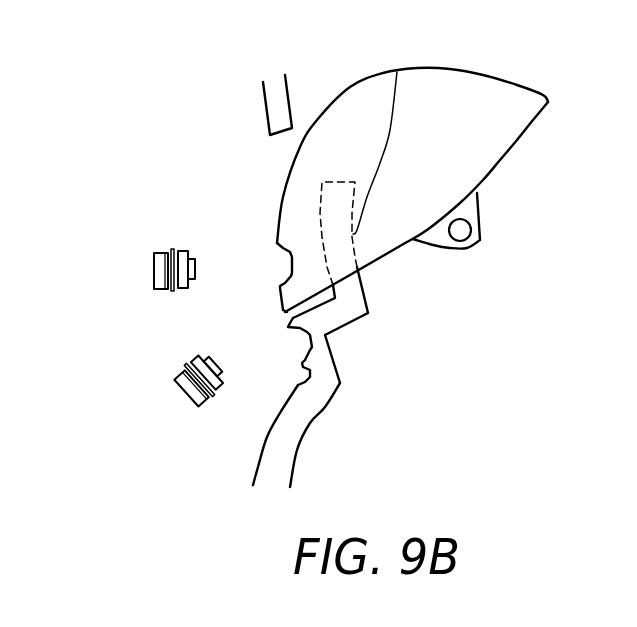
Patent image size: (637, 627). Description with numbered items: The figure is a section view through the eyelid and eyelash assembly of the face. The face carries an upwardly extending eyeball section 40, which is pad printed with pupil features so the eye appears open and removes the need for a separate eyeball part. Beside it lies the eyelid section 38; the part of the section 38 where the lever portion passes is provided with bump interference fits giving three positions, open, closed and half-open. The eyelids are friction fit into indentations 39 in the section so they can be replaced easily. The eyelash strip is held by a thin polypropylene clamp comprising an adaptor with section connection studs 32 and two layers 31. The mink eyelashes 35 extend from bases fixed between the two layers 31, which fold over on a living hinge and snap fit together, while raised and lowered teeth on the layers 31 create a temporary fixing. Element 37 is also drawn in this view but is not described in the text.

The layers 31 is at (153, 267).
The section connection studs 32 is at (190, 251).
The eyelashes 35 is at (172, 290).
The shell 37 is at (465, 83).
The section 38 is at (482, 223).
The indentations 39 is at (290, 273).
The eyeball section 40 is at (397, 72).